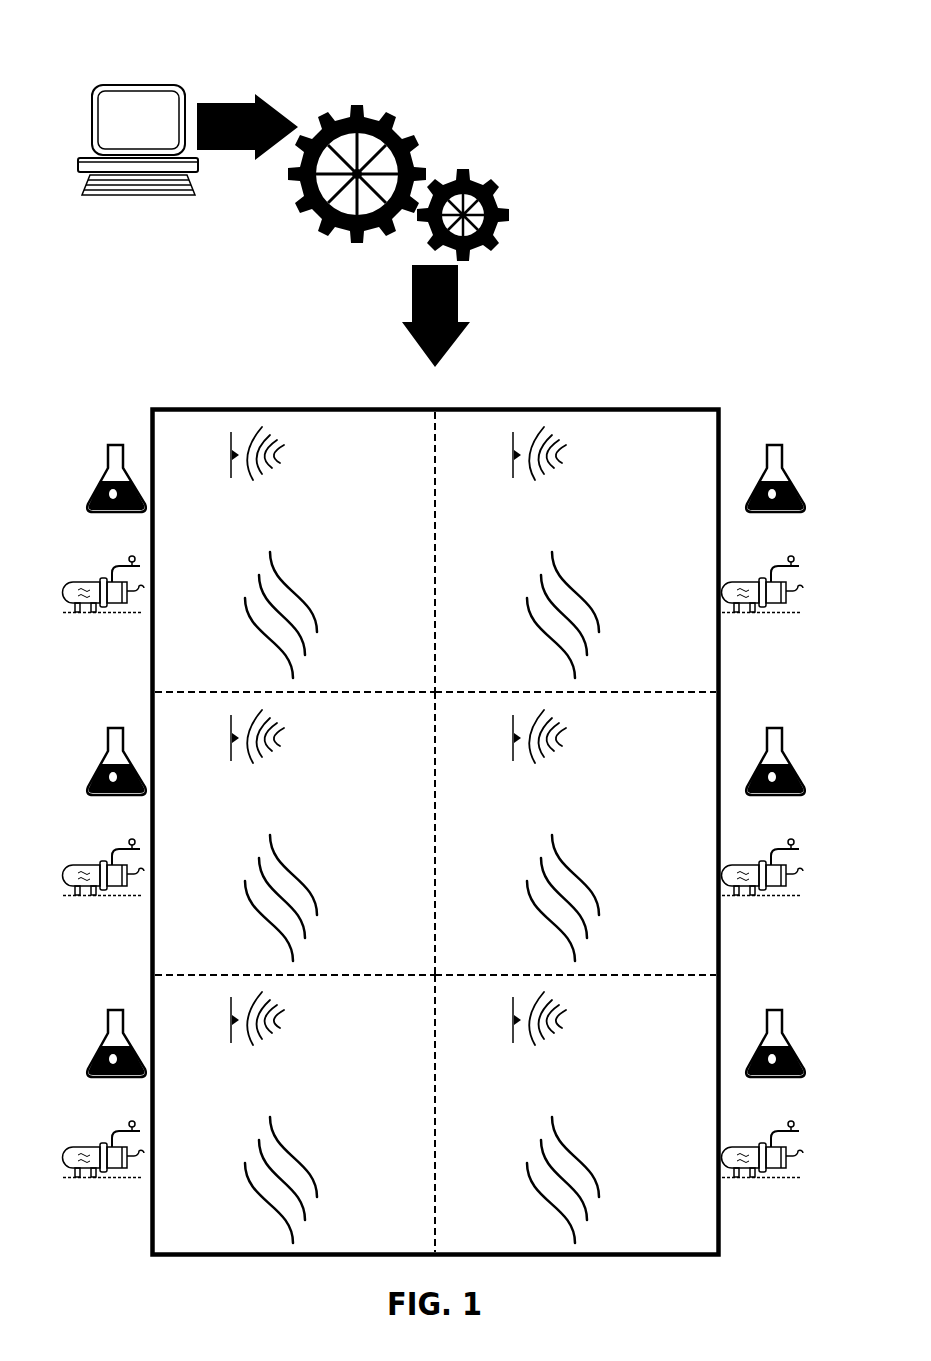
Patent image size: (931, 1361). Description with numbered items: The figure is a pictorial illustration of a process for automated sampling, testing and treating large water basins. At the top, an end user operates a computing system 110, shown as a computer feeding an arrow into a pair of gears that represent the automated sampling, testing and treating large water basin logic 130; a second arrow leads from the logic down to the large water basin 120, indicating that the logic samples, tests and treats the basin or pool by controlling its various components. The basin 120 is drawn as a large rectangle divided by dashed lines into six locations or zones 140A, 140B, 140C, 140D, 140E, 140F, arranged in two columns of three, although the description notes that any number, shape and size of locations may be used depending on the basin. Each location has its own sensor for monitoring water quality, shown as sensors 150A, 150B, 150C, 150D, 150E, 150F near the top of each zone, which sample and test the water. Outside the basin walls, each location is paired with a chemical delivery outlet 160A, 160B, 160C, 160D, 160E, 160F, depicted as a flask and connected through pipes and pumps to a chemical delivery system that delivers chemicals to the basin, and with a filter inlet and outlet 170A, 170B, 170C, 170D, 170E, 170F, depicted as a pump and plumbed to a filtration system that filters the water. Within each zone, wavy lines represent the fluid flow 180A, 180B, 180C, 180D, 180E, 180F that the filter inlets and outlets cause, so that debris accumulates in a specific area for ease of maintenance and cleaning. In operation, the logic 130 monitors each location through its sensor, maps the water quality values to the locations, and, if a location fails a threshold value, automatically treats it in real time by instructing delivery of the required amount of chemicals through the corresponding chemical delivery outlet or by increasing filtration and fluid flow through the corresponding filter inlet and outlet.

The computing system 110 is at (138, 123).
The large water basin 120 is at (436, 816).
The automated sampling, testing and treating large water basin logic 130 is at (390, 184).
The location 140A is at (295, 552).
The location 140B is at (575, 552).
The location 140C is at (295, 833).
The location 140D is at (575, 833).
The location 140E is at (295, 1113).
The location 140F is at (575, 1113).
The sensor 150A is at (229, 453).
The sensor 150B is at (511, 453).
The sensor 150C is at (229, 736).
The sensor 150D is at (511, 736).
The sensor 150E is at (229, 1018).
The sensor 150F is at (511, 1018).
The chemical delivery outlet 160A is at (108, 495).
The chemical delivery outlet 160B is at (767, 495).
The chemical delivery outlet 160C is at (108, 778).
The chemical delivery outlet 160D is at (767, 778).
The chemical delivery outlet 160E is at (108, 1060).
The chemical delivery outlet 160F is at (767, 1060).
The filter inlet and outlet 170A is at (104, 603).
The filter inlet and outlet 170B is at (763, 603).
The filter inlet and outlet 170C is at (104, 886).
The filter inlet and outlet 170D is at (763, 886).
The filter inlet and outlet 170E is at (104, 1168).
The filter inlet and outlet 170F is at (763, 1168).
The fluid flow 180A is at (258, 615).
The fluid flow 180B is at (540, 615).
The fluid flow 180C is at (258, 898).
The fluid flow 180D is at (540, 898).
The fluid flow 180E is at (258, 1180).
The fluid flow 180F is at (540, 1180).